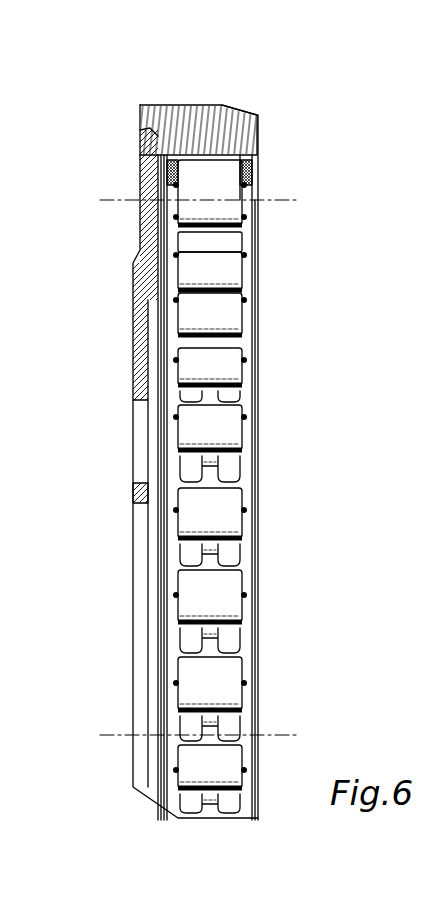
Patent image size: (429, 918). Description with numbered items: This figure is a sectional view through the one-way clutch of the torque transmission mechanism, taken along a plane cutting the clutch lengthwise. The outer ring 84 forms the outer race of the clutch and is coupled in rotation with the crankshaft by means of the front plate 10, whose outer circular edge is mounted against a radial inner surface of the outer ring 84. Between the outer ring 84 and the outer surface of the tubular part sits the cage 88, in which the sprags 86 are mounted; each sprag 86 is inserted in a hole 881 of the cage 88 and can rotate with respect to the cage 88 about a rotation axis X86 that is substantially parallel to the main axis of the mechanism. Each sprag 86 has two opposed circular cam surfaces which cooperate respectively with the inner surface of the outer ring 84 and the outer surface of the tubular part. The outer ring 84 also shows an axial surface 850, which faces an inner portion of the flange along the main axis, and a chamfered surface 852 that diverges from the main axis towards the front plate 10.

The front plate 10 is at (132, 280).
The outer ring 84 is at (210, 122).
The chamfered surface 852 is at (250, 104).
The axial surface 850 is at (260, 137).
The cage 88 is at (262, 172).
The rotation axis X86 is at (179, 463).
The sprags 86 is at (190, 515).
The hole 881 is at (185, 640).